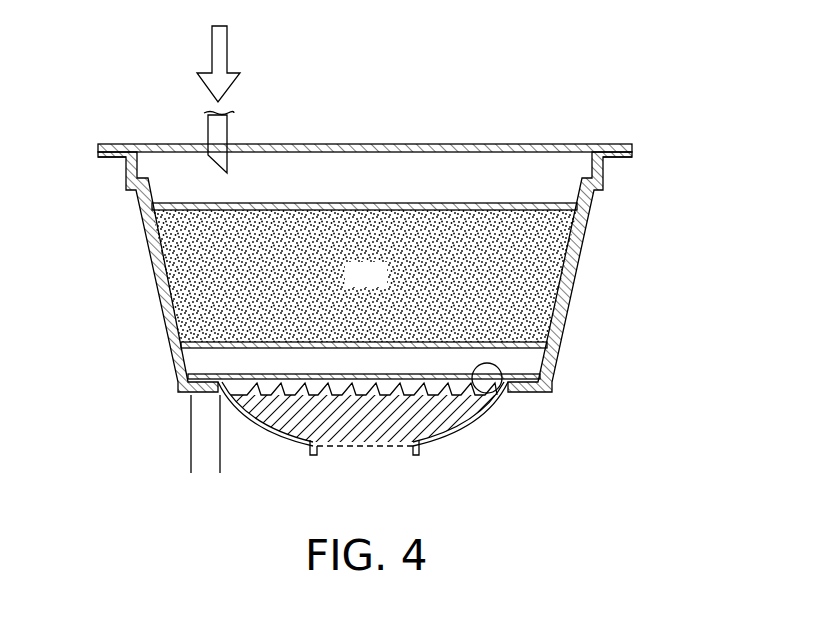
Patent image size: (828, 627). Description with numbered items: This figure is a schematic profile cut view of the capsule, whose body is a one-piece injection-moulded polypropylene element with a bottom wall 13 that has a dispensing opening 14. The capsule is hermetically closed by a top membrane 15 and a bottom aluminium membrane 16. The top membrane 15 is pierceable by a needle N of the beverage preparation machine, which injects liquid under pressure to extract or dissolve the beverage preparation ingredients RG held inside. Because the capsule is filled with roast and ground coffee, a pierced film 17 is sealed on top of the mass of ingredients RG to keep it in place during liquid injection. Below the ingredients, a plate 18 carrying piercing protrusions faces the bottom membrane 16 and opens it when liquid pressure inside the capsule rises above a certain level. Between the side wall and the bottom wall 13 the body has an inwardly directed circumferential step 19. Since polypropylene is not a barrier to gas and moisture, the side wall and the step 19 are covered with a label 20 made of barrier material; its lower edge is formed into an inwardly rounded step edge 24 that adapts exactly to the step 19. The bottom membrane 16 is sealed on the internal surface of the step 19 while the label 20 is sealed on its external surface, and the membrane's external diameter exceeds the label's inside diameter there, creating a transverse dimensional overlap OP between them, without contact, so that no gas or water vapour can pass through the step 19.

The bottom wall 13 is at (475, 423).
The dispensing opening 14 is at (334, 465).
The top membrane 15 is at (483, 144).
The bottom membrane 16 is at (505, 388).
The pierced film 17 is at (352, 203).
The plate 18 is at (433, 420).
The circumferential step 19 is at (196, 369).
The label 20 is at (573, 262).
The inwardly rounded step edge 24 is at (192, 393).
The needle N is at (216, 132).
The beverage preparation ingredients RG is at (383, 284).
The overlap OP is at (150, 463).